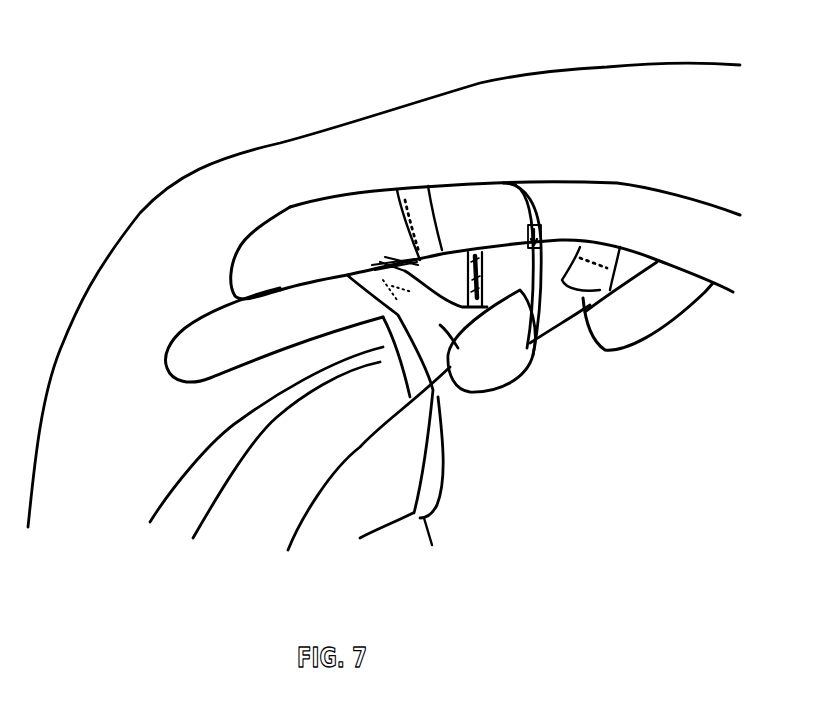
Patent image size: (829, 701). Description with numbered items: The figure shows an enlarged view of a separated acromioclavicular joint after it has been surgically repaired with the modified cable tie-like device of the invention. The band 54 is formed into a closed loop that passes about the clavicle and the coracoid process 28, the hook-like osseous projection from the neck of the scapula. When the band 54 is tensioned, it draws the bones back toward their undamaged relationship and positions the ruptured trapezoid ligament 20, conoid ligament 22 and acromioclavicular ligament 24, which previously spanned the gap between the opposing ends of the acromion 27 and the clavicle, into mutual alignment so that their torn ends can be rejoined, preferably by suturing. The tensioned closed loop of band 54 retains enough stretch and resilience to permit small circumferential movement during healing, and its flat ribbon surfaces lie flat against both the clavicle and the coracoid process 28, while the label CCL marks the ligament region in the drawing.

The trapezoid ligament 20 is at (507, 253).
The conoid ligament 22 is at (605, 253).
The acromioclavicular ligament 24 is at (407, 200).
The acromion 27 is at (280, 247).
The coracoid process 28 is at (487, 360).
The band 54 is at (527, 343).
The cranial cruciate ligament CCL is at (480, 383).